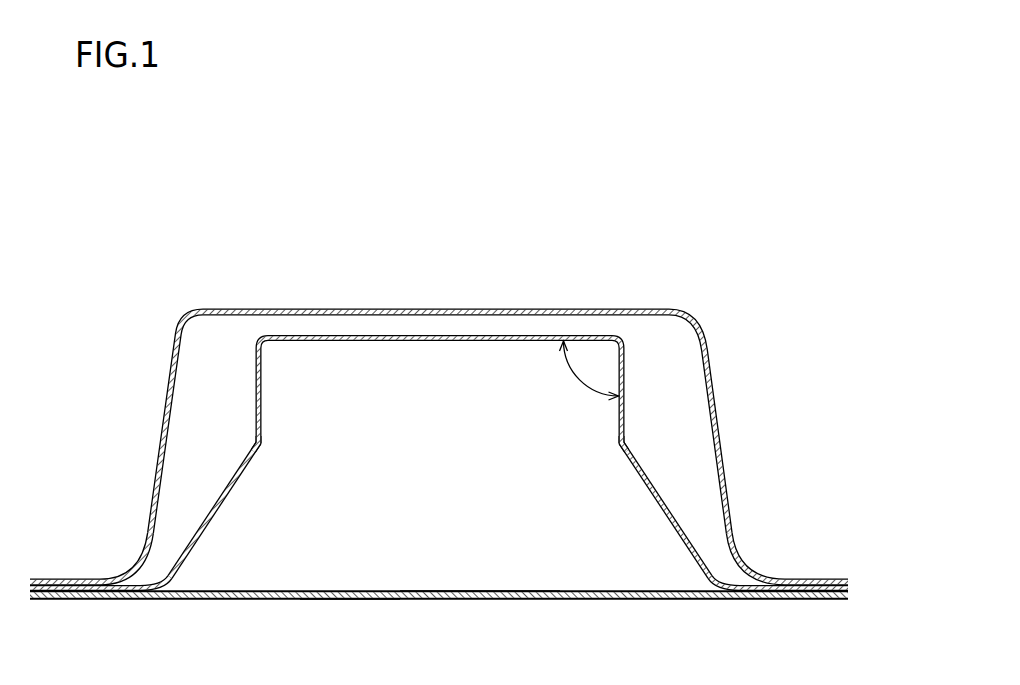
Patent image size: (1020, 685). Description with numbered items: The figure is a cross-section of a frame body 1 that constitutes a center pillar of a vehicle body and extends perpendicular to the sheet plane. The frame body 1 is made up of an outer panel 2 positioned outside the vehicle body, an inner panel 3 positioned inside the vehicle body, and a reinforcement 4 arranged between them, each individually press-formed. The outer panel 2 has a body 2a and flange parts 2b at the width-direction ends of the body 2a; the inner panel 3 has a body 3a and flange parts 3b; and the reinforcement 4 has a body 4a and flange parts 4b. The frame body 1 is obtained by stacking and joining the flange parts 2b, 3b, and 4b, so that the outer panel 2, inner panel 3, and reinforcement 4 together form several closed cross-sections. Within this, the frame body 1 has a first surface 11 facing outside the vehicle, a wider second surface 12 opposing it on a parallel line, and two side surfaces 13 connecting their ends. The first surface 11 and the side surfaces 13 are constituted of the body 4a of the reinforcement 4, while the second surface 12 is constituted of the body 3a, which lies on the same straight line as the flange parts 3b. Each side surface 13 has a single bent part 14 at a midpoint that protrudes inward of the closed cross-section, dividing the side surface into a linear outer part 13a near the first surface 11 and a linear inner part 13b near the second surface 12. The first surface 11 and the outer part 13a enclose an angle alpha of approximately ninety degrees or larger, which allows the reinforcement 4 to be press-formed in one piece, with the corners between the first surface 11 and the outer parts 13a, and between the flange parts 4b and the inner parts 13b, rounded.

The frame body 1 is at (664, 138).
The outer panel 2 is at (261, 300).
The body 2a is at (634, 308).
The flange parts 2b is at (62, 578).
The inner panel 3 is at (427, 604).
The body 3a is at (482, 599).
The flange parts 3b is at (77, 600).
The reinforcement 4 is at (399, 331).
The body 4a is at (627, 362).
The flange parts 4b is at (120, 585).
The first surface 11 is at (517, 332).
The second surface 12 is at (345, 600).
The side surfaces 13 is at (80, 362).
The outer part 13a is at (255, 380).
The inner part 13b is at (218, 498).
The bent part 14 is at (257, 440).